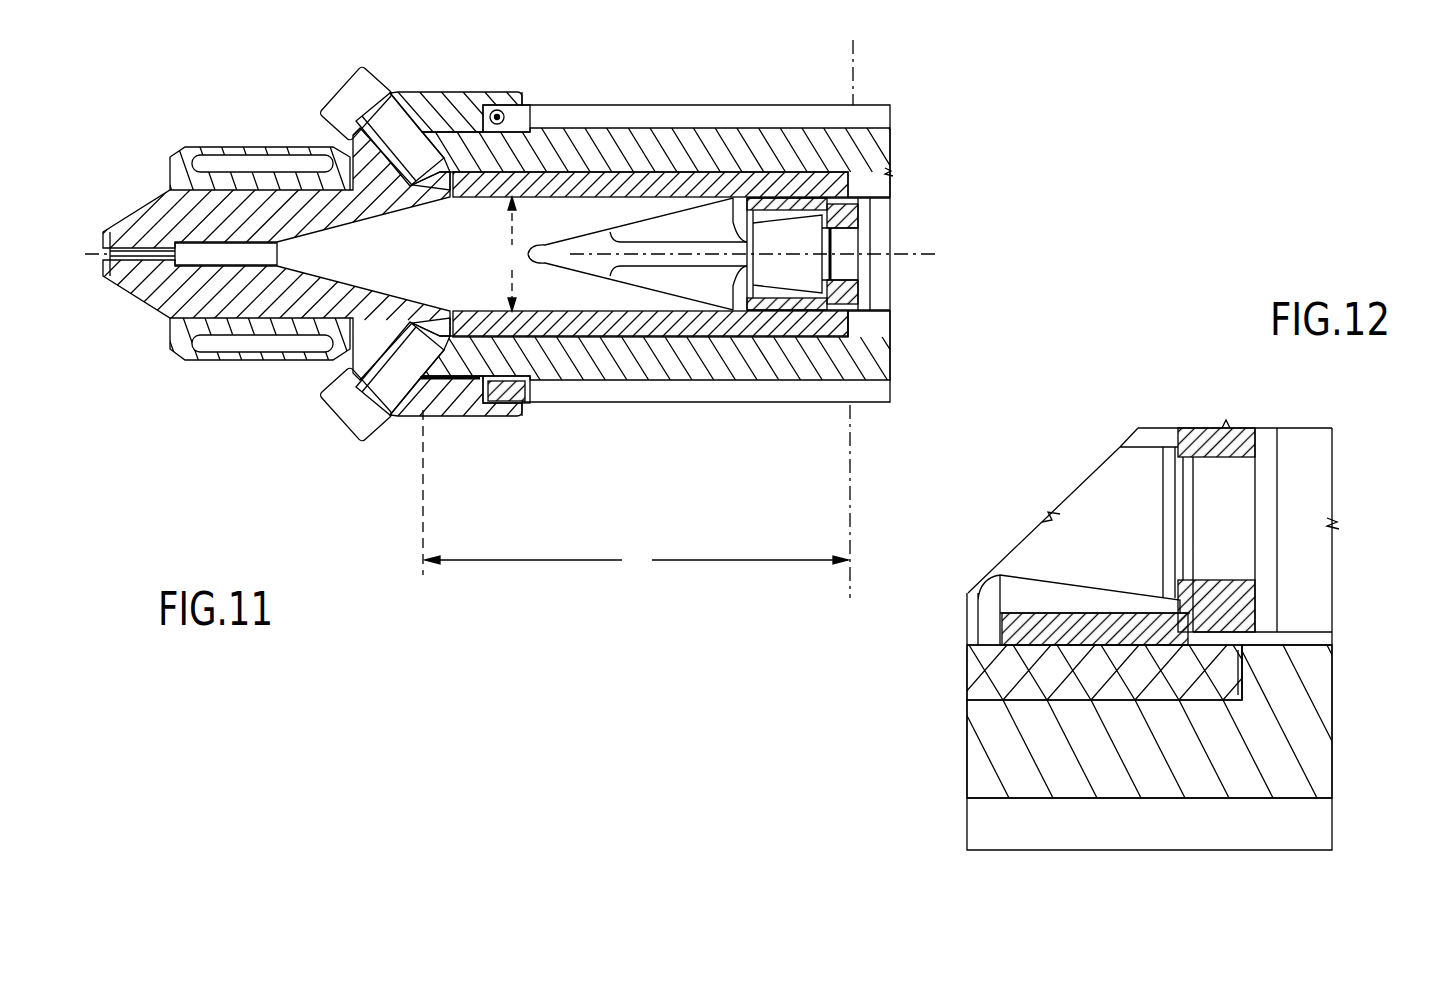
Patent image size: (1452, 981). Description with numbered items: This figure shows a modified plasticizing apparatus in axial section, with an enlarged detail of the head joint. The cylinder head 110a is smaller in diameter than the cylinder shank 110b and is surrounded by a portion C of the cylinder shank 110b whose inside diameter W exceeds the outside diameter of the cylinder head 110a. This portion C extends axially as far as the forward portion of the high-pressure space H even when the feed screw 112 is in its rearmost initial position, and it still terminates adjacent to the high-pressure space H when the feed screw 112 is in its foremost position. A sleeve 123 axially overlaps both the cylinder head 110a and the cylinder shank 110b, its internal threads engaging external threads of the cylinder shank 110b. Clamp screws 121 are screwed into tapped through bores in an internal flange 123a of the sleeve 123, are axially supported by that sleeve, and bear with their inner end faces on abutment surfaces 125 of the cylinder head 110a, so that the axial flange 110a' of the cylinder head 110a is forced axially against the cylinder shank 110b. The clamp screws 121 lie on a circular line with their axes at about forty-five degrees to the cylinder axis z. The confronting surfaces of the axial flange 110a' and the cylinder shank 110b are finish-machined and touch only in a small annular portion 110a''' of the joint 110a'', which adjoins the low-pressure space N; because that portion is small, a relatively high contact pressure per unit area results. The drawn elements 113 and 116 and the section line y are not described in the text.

In FIG. 11, the cylinder head 110a is at (278, 254).
In FIG. 11, the axial flange 110a' is at (648, 188).
In FIG. 11, the joint 110a'' is at (922, 357).
In FIG. 12, the joint 110a'' is at (1120, 698).
In FIG. 12, the annular portion 110a''' is at (1341, 672).
In FIG. 11, the cylinder shank 110b is at (875, 145).
In FIG. 12, the cylinder shank 110b is at (1293, 748).
In FIG. 11, the feed screw 112 is at (873, 292).
In FIG. 12, the feed screw 112 is at (1307, 581).
In FIG. 11, the collet 113 is at (668, 303).
In FIG. 12, the collet 113 is at (1153, 424).
In FIG. 11, the nozzle bore 116 is at (228, 252).
In FIG. 11, the clamp screws 121 is at (337, 112).
In FIG. 11, the sleeve 123 is at (450, 405).
In FIG. 11, the internal flange 123a is at (353, 357).
In FIG. 11, the abutment surfaces 125 is at (448, 172).
In FIG. 11, the low-pressure space N is at (893, 172).
In FIG. 11, the inside diameter W is at (512, 254).
In FIG. 11, the high-pressure space H is at (547, 290).
In FIG. 11, the portion of the cylinder shank C is at (636, 560).
In FIG. 11, the axis of the cylinder z is at (513, 254).
In FIG. 11, the section line y is at (849, 610).